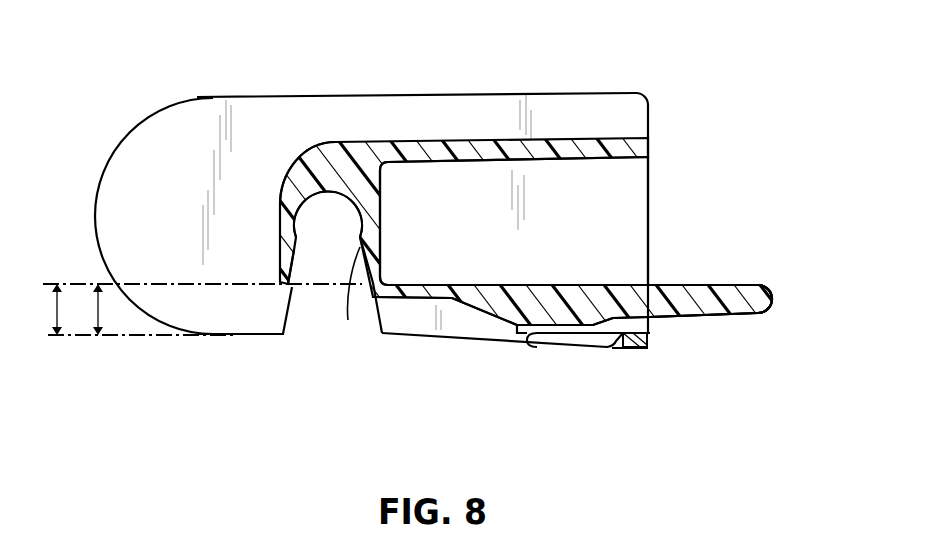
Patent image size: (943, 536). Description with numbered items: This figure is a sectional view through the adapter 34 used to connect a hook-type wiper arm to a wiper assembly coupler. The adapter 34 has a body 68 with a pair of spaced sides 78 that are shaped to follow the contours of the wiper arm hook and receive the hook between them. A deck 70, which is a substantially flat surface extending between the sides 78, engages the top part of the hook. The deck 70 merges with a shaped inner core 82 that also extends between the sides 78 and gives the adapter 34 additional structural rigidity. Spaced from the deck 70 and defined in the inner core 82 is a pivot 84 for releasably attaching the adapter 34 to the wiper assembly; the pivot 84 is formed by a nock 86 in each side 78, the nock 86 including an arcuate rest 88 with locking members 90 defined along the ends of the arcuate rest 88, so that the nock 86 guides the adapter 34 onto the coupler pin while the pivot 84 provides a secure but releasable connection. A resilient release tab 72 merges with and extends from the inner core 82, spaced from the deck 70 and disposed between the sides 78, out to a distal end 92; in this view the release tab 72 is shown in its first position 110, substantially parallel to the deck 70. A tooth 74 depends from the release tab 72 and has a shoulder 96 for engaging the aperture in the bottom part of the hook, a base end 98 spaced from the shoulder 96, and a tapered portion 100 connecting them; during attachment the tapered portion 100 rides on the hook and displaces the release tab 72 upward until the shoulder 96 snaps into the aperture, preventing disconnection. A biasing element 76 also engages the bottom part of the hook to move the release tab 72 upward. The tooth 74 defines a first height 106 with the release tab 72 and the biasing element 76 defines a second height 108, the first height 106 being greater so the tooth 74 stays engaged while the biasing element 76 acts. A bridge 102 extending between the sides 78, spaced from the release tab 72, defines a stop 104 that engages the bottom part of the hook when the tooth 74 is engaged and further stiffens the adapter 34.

The adapter 34 is at (122, 106).
The body 68 is at (640, 90).
The deck 70 is at (468, 142).
The release tab 72 is at (663, 312).
The first position 110 is at (710, 301).
The tooth 74 is at (497, 332).
The biasing element 76 is at (560, 318).
The sides 78 is at (157, 320).
The inner core 82 is at (363, 163).
The pivot 84 is at (327, 178).
The nock 86 is at (322, 304).
The arcuate rest 88 is at (282, 233).
The locking member 90 is at (348, 320).
The distal end 92 is at (775, 298).
The shoulder 96 is at (534, 333).
The base end 98 is at (447, 300).
The tapered portion 100 is at (473, 325).
The bridge 102 is at (648, 349).
The stop 104 is at (607, 350).
The first height 106 is at (63, 305).
The second height 108 is at (96, 308).